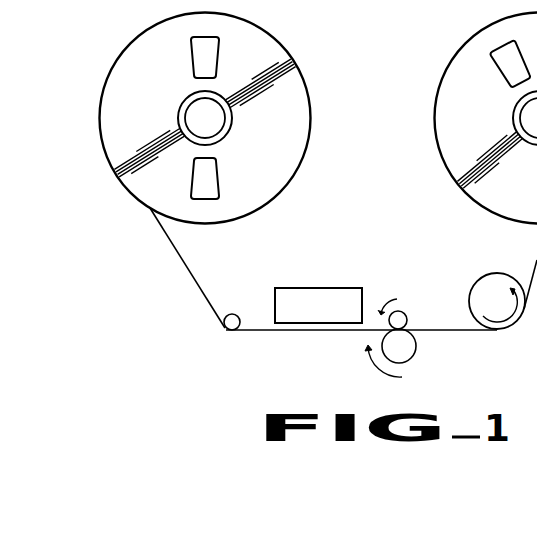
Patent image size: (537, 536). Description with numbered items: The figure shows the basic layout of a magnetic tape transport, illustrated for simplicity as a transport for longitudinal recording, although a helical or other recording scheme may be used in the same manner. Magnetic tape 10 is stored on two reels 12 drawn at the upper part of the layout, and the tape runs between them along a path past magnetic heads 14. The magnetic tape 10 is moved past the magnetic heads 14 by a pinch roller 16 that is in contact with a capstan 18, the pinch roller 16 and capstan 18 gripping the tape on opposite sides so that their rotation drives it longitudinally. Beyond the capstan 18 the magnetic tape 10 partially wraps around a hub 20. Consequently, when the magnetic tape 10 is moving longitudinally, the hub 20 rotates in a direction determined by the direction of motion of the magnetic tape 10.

The magnetic tape 10 is at (193, 270).
The reels 12 is at (434, 80).
The magnetic heads 14 is at (325, 288).
The pinch roller 16 is at (416, 348).
The capstan 18 is at (408, 311).
The hub 20 is at (481, 273).